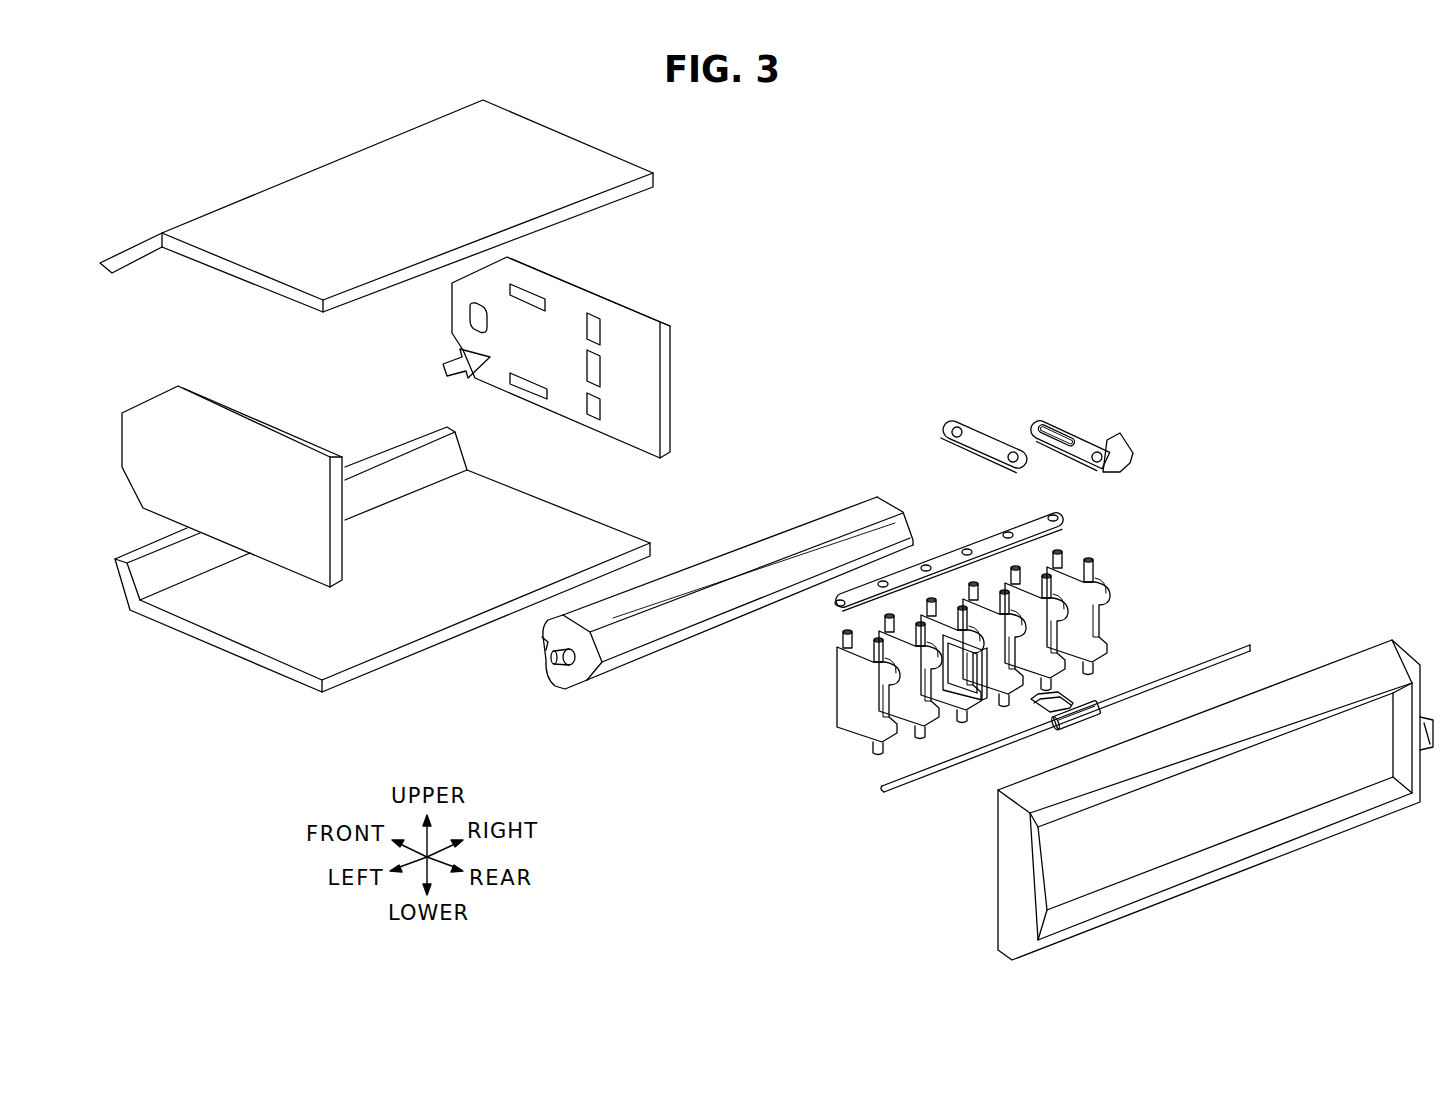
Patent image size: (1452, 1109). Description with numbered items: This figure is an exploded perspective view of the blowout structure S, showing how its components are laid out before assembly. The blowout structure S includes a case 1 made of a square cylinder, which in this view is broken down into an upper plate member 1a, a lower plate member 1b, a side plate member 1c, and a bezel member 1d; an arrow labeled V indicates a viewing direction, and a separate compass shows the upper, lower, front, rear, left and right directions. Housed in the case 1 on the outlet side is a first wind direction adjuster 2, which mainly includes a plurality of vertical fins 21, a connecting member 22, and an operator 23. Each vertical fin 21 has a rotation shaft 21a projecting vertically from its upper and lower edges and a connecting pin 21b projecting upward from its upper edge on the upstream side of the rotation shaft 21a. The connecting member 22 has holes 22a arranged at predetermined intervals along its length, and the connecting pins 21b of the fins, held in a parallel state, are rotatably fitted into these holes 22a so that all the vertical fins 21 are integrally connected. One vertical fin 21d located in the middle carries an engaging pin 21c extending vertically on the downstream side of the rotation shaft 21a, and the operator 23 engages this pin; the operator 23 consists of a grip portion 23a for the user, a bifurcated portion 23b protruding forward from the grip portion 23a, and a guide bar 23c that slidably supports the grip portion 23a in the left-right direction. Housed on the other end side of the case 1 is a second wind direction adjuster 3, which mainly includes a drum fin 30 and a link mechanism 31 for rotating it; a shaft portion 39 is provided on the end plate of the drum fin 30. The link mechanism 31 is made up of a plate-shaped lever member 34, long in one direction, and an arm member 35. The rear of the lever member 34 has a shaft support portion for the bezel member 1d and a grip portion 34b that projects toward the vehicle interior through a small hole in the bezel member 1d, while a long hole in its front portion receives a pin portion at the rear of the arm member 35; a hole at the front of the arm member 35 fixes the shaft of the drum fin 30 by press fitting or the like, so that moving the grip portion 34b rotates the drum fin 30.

The blowout structure S is at (912, 219).
The case 1 is at (766, 530).
The upper plate member 1a is at (633, 167).
The lower plate member 1b is at (293, 654).
The side plate member 1c is at (653, 322).
The bezel member 1d is at (1360, 658).
The viewing direction arrow V is at (441, 362).
The first wind direction adjuster 2 is at (1002, 708).
The second wind direction adjuster 3 is at (696, 602).
The drum fin 30 is at (773, 533).
The shaft portion 39 is at (556, 660).
The link mechanism 31 is at (1070, 376).
The lever member 34 is at (1126, 399).
The grip portion 34b is at (1135, 465).
The arm member 35 is at (984, 401).
The vertical fin 21 is at (963, 649).
The rotation shaft 21a is at (1088, 560).
The connecting pin 21b is at (1060, 550).
The engaging pin 21c is at (984, 660).
The vertical fin 21d is at (955, 703).
The connecting member 22 is at (950, 541).
The holes 22a is at (886, 582).
The operator 23 is at (1015, 796).
The grip portion 23a is at (1058, 728).
The bifurcated portion 23b is at (1033, 710).
The guide bar 23c is at (917, 777).